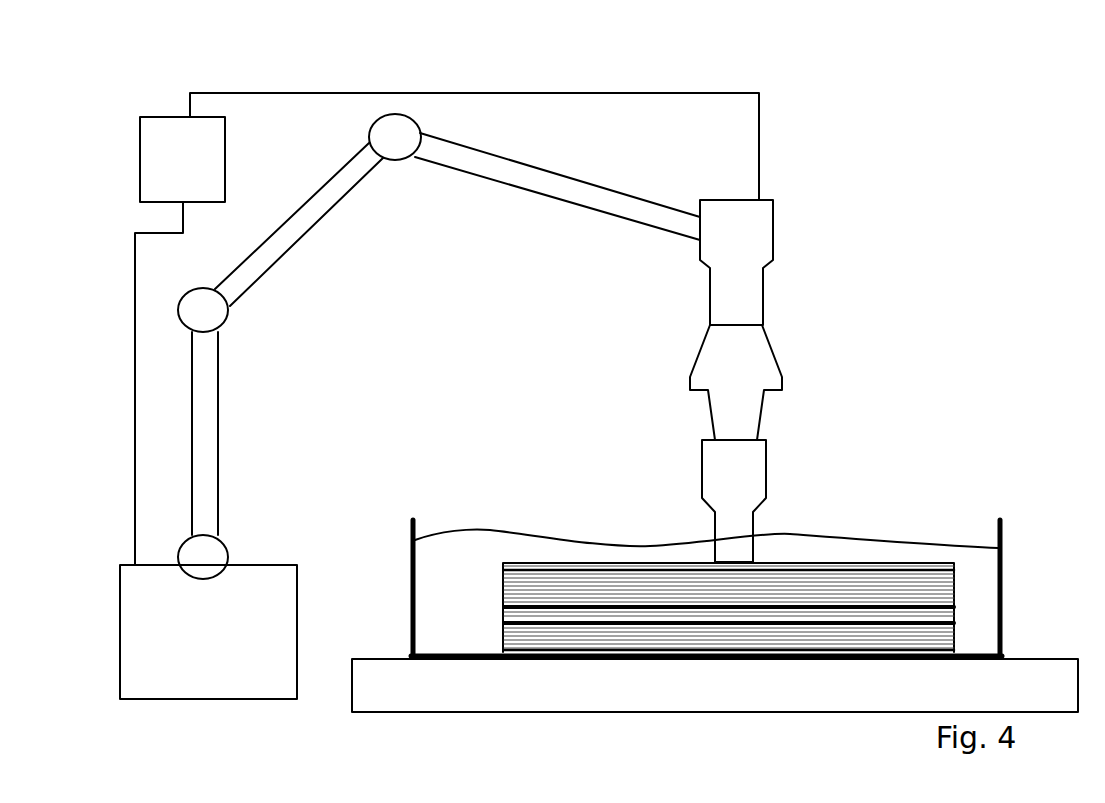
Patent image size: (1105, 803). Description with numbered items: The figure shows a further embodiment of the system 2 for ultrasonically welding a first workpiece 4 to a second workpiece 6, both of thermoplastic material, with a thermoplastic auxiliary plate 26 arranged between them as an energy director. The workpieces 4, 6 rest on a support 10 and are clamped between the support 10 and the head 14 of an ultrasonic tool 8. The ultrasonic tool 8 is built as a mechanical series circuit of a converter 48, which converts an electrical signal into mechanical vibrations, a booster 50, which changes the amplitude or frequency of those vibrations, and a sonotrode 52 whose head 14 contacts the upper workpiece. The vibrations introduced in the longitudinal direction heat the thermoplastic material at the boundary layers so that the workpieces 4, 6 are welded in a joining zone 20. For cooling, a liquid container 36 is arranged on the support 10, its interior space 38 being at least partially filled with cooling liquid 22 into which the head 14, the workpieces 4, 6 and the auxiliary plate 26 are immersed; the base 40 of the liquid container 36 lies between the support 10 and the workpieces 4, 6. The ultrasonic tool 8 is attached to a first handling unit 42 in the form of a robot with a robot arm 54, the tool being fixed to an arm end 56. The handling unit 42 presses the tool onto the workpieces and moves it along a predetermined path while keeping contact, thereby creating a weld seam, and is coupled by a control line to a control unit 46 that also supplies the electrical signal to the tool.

The system 2 is at (919, 221).
The first workpiece 4 is at (690, 567).
The second workpiece 6 is at (499, 638).
The ultrasonic tool 8 is at (776, 381).
The support 10 is at (995, 687).
The head 14 is at (705, 556).
The joining zone 20 is at (740, 617).
The cooling liquid 22 is at (978, 603).
The auxiliary plate 26 is at (499, 615).
The liquid container 36 is at (1008, 537).
The interior space 38 is at (743, 530).
The base 40 is at (970, 648).
The first handling unit 42 is at (307, 290).
The control unit 46 is at (195, 172).
The converter 48 is at (782, 249).
The booster 50 is at (782, 352).
The sonotrode 52 is at (774, 465).
The robot arm 54 is at (554, 165).
The arm end 56 is at (691, 201).